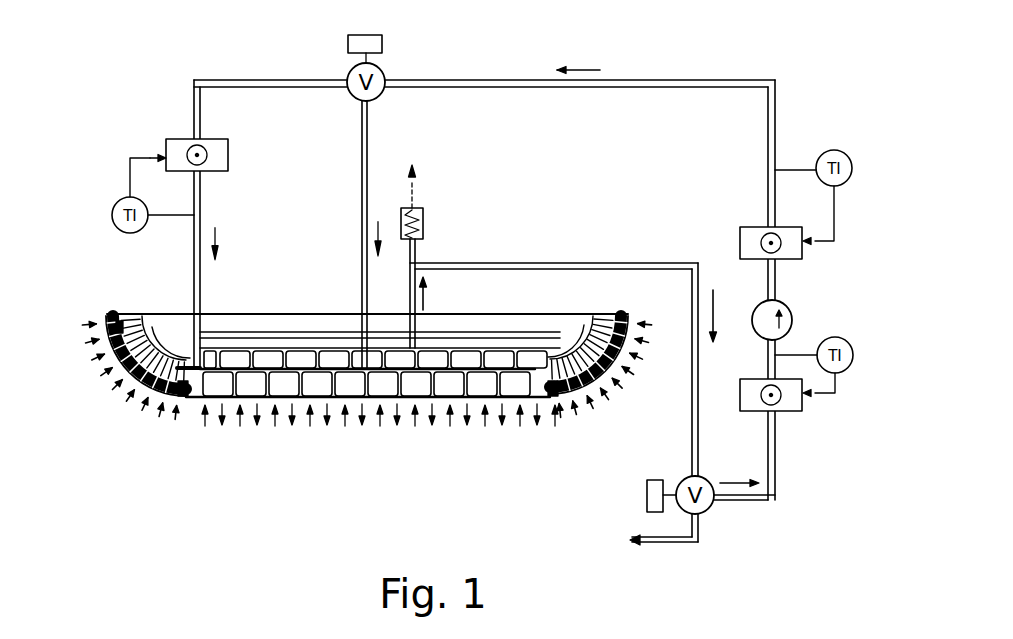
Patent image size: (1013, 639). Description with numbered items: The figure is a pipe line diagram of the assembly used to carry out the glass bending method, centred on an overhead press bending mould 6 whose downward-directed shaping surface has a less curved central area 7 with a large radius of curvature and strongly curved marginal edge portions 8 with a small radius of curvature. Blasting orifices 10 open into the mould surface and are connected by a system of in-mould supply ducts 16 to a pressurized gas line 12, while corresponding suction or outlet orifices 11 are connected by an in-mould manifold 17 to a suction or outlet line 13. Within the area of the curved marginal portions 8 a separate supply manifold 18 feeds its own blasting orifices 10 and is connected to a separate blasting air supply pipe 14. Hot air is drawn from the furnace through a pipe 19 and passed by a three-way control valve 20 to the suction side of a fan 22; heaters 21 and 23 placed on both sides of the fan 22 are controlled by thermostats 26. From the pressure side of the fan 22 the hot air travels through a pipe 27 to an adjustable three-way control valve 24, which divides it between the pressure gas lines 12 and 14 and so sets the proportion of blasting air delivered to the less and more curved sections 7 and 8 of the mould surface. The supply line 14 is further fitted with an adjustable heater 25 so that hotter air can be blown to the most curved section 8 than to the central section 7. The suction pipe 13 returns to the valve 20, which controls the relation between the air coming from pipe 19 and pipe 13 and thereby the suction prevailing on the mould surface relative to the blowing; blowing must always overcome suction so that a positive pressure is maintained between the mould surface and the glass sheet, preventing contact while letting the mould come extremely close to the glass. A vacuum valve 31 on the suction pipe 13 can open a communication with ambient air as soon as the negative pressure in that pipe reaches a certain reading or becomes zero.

The press bending mould 6 is at (551, 309).
The central area of shaping surface 7 is at (226, 400).
The marginal edge portions of shaping surface 8 is at (120, 384).
The blasting orifices 10 is at (273, 402).
The suction orifices 11 is at (397, 399).
The pressurized gas line 12 is at (362, 213).
The suction line 13 is at (415, 250).
The blasting air supply pipe 14 is at (203, 207).
The supply ducts 16 is at (270, 372).
The in-mould manifold 17 is at (503, 352).
The separate supply manifold 18 is at (130, 328).
The pipe 19 is at (664, 545).
The three-way control valve 20 is at (708, 510).
The heater 21 is at (793, 412).
The fan 22 is at (793, 318).
The heater 23 is at (795, 255).
The adjustable three-way control valve 24 is at (386, 72).
The adjustable heater 25 is at (175, 138).
The thermostats 26 is at (118, 205).
The pipe 27 is at (630, 80).
The vacuum valve 31 is at (423, 212).